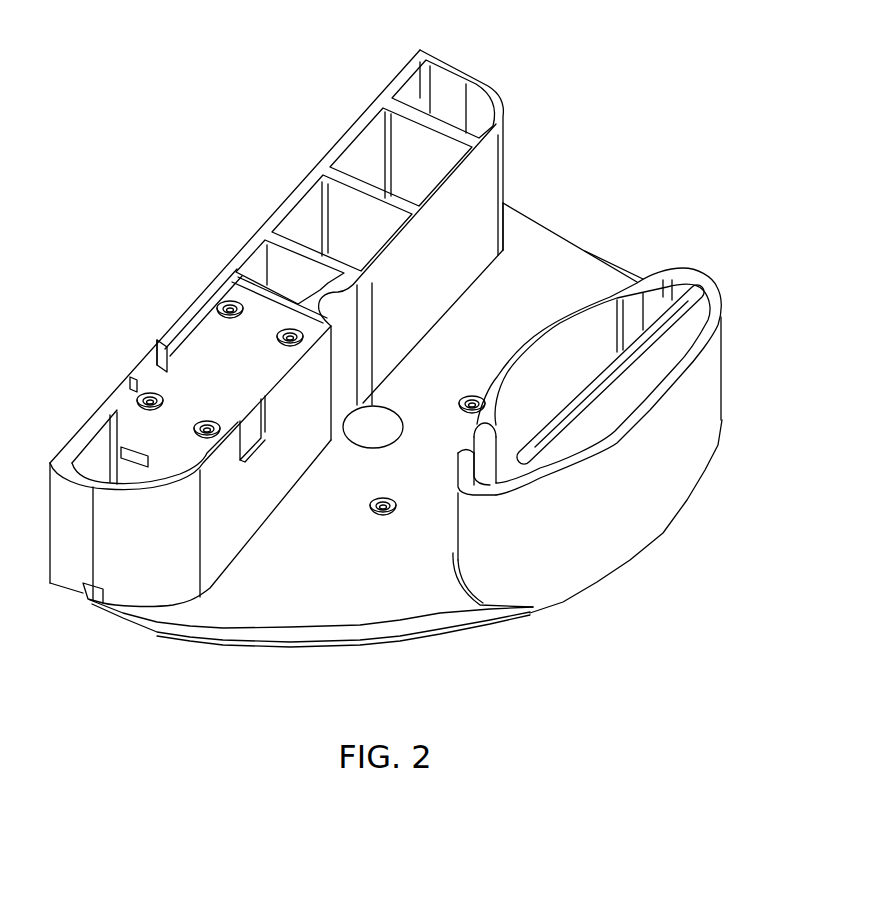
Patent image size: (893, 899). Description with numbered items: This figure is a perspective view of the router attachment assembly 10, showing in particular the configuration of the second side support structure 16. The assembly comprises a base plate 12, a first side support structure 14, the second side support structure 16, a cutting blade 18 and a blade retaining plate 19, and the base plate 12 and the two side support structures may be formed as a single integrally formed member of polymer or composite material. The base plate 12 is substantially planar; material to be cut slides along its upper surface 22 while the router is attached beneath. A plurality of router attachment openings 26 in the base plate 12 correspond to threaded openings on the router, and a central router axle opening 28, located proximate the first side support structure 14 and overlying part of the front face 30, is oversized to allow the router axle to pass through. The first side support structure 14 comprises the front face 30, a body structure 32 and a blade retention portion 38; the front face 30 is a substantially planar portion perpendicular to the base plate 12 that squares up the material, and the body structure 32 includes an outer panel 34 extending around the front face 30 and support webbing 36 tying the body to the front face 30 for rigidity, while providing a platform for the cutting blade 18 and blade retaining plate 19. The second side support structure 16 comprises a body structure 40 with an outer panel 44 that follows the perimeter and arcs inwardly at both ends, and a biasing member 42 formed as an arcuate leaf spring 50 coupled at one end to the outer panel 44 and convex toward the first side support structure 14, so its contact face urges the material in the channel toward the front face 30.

The router attachment assembly 10 is at (576, 52).
The base plate 12 is at (273, 616).
The first side support structure 14 is at (255, 212).
The second side support structure 16 is at (678, 493).
The cutting blade 18 is at (250, 463).
The blade retaining plate 19 is at (192, 350).
The upper surface 22 is at (568, 257).
The router attachment openings 26 is at (471, 392).
The central router axle opening 28 is at (344, 437).
The front face 30 is at (474, 216).
The body structure 32 is at (330, 120).
The outer panel 34 is at (203, 290).
The support webbing 36 is at (430, 117).
The blade retention portion 38 is at (165, 380).
The body structure 40 is at (737, 315).
The biasing member 42 is at (457, 434).
The outer panel 44 is at (706, 384).
The leaf spring 50 is at (568, 378).